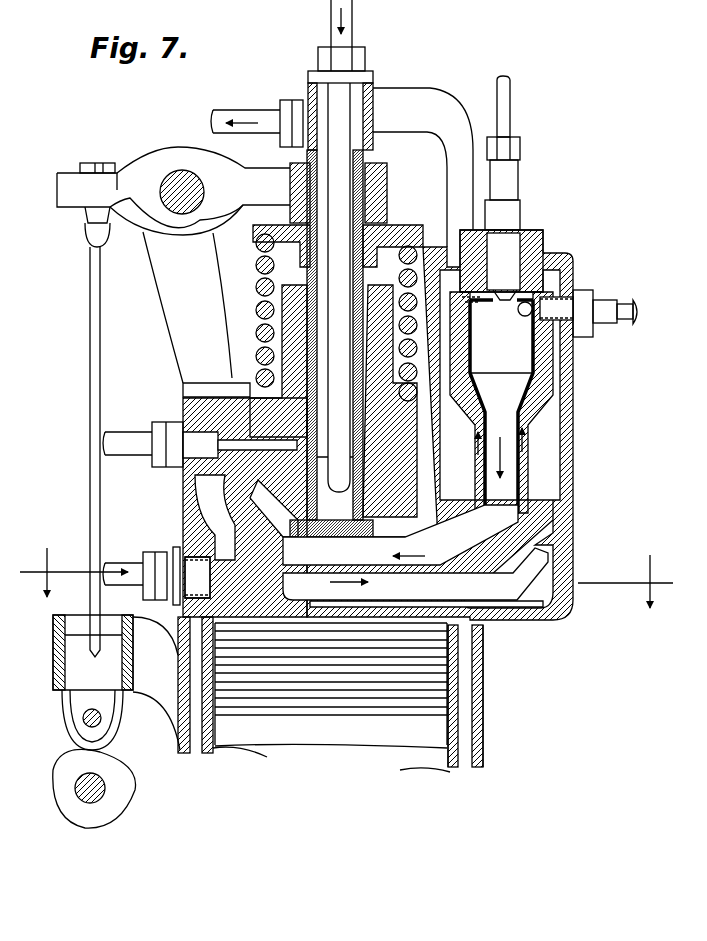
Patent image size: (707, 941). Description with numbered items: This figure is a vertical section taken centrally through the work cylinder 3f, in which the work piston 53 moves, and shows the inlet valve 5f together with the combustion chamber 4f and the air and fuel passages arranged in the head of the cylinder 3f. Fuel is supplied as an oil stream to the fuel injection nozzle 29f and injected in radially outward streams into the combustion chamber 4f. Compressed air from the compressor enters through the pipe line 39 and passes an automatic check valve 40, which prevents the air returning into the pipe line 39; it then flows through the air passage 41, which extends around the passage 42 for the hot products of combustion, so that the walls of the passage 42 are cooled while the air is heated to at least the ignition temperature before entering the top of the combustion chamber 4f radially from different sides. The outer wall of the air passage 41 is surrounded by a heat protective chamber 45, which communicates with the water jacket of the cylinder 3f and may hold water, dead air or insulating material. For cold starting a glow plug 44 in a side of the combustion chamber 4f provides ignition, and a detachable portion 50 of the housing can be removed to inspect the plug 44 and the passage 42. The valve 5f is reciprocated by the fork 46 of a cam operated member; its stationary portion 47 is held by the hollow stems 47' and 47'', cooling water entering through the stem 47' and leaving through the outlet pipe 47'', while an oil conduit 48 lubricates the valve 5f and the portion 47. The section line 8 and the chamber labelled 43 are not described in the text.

The hollow stem 47' is at (352, 41).
The outlet pipe 47'' is at (257, 114).
The stationary valve portion 47 is at (423, 167).
The fork 46 is at (383, 200).
The oil conduit 48 is at (133, 440).
The fuel injection nozzle 29f is at (548, 257).
The heat protective chamber 45 is at (499, 439).
The detachable portion 50 is at (507, 277).
The combustion chamber 4f is at (507, 365).
The nozzle chamber 43 is at (501, 336).
The glow plug 44 is at (605, 311).
The inlet valve 5f is at (393, 547).
The combustion gas passage 42 is at (503, 455).
The air passage 41 is at (513, 478).
The section line VIII 8 is at (346, 576).
The pipe line 39 is at (153, 578).
The automatic check valve 40 is at (181, 602).
The work piston 53 is at (330, 694).
The work cylinder 3f is at (452, 727).